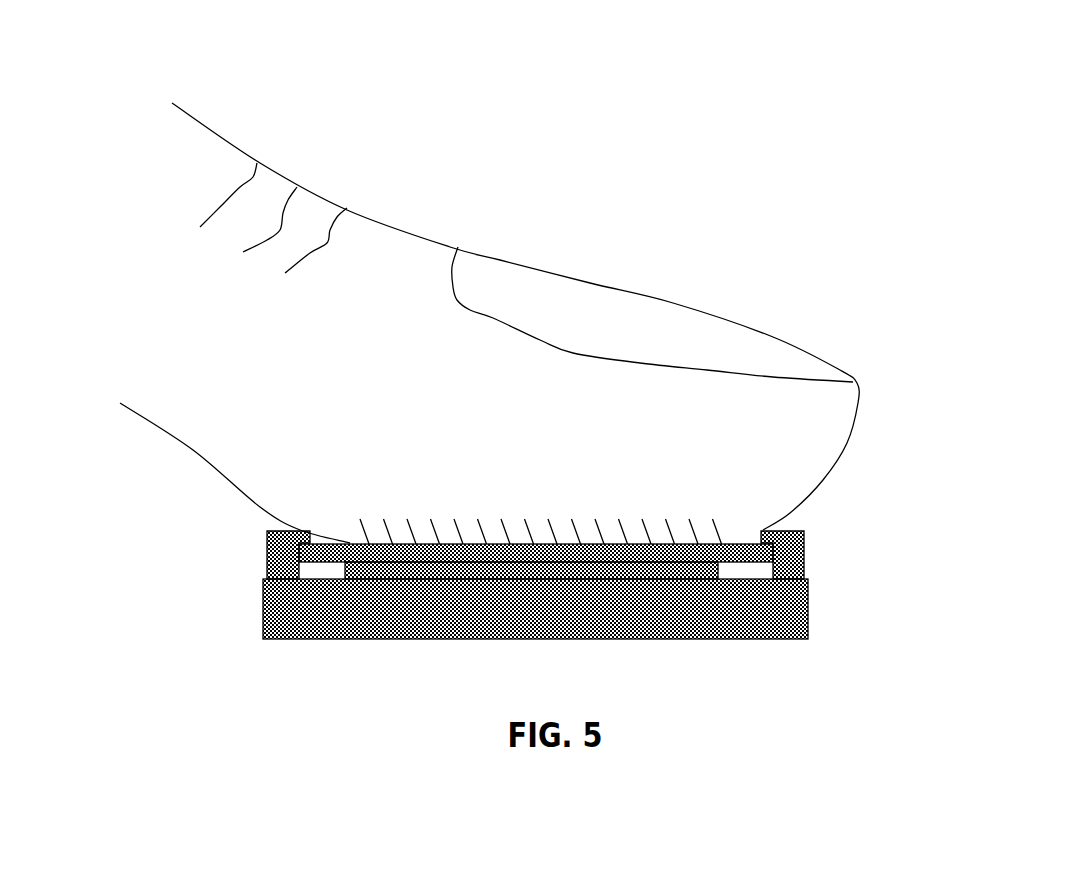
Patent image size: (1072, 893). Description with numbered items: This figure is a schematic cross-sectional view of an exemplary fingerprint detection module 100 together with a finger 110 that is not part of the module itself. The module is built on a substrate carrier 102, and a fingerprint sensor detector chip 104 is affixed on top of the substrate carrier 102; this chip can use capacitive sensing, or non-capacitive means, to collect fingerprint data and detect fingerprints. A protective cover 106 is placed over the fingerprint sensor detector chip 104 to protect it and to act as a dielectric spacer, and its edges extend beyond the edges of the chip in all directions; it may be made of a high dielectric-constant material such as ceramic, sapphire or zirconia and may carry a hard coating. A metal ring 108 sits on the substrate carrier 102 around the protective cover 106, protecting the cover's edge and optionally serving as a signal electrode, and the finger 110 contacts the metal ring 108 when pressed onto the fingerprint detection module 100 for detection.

The fingerprint detection module 100 is at (688, 108).
The substrate carrier 102 is at (780, 623).
The fingerprint sensor detector chip 104 is at (697, 572).
The protective cover 106 is at (293, 547).
The metal ring 108 is at (790, 545).
The finger 110 is at (680, 303).